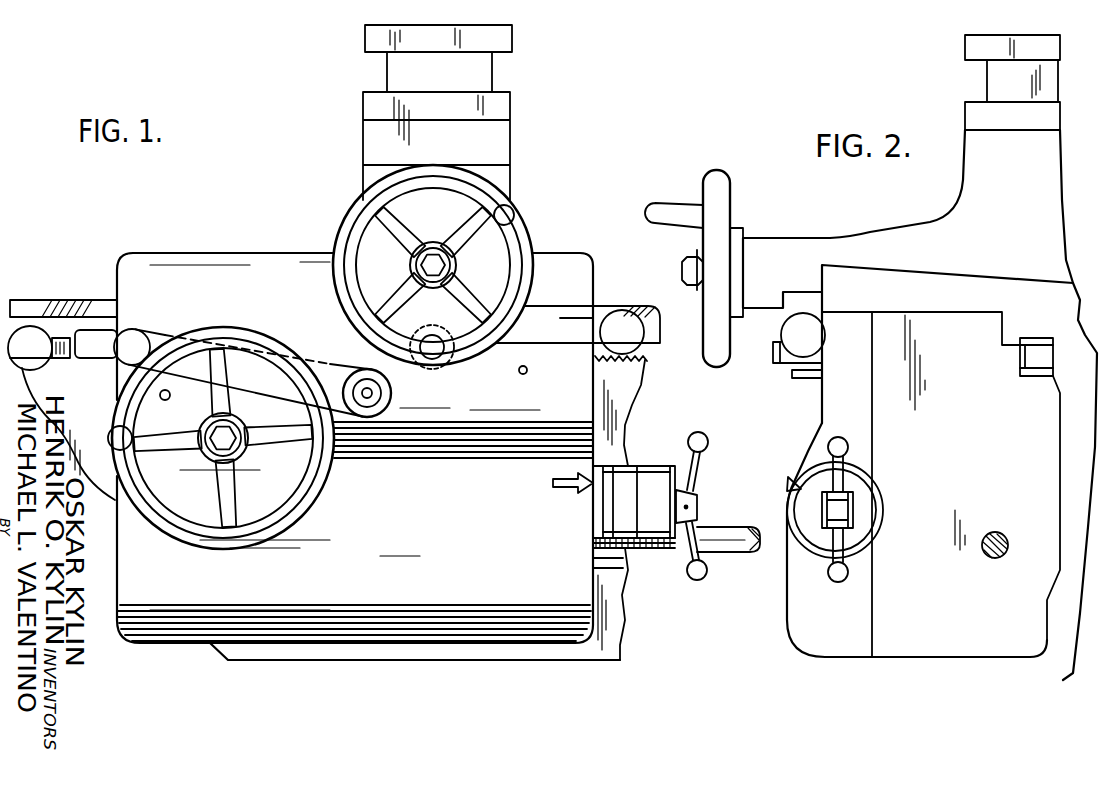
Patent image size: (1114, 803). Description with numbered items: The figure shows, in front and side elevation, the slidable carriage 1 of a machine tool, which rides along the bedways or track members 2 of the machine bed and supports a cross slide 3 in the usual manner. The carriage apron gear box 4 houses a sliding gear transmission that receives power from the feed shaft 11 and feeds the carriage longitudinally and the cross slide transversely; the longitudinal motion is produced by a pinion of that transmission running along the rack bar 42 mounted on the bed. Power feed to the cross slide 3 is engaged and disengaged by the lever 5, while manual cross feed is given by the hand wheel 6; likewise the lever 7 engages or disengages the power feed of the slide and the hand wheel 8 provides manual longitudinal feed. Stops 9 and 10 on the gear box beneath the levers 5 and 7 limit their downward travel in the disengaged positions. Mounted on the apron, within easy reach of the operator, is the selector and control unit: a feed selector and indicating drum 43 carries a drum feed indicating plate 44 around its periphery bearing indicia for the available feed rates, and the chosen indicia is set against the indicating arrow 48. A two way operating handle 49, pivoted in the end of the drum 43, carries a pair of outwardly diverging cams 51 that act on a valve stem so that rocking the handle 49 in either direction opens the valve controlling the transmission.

In FIG. 1, the carriage 1 is at (593, 282).
In FIG. 1, the bedways or track members 2 is at (600, 318).
In FIG. 1, the cross slide 3 is at (497, 151).
In FIG. 2, the cross slide 3 is at (968, 190).
In FIG. 1, the carriage apron gear box 4 is at (586, 394).
In FIG. 1, the lever 5 is at (500, 350).
In FIG. 2, the lever 5 is at (788, 333).
In FIG. 1, the hand wheel 6 is at (525, 231).
In FIG. 2, the hand wheel 6 is at (723, 203).
In FIG. 1, the lever 7 is at (155, 338).
In FIG. 1, the hand wheel 8 is at (165, 445).
In FIG. 1, the stop 9 is at (527, 368).
In FIG. 1, the stop 10 is at (178, 401).
In FIG. 1, the feed shaft 11 is at (725, 528).
In FIG. 2, the feed shaft 11 is at (994, 532).
In FIG. 1, the rack bar 42 is at (648, 352).
In FIG. 2, the rack bar 42 is at (1054, 374).
In FIG. 1, the feed selector and indicating drum 43 is at (670, 466).
In FIG. 1, the drum feed indicating plate 44 is at (638, 548).
In FIG. 1, the indicating arrow 48 is at (567, 493).
In FIG. 2, the indicating arrow 48 is at (782, 476).
In FIG. 1, the two way operating handle 49 is at (698, 472).
In FIG. 2, the two way operating handle 49 is at (843, 468).
In FIG. 2, the cams 51 is at (870, 528).